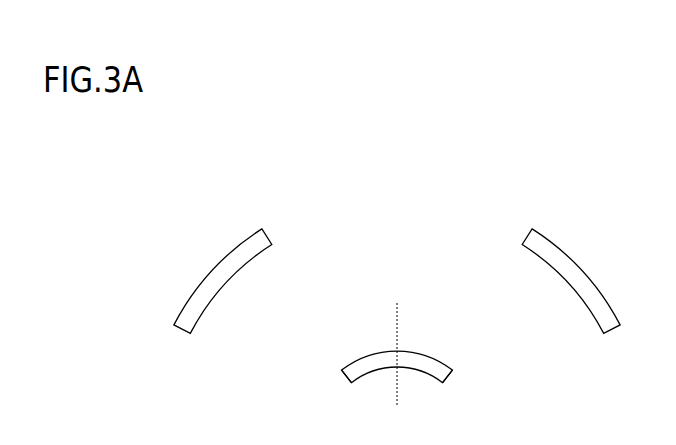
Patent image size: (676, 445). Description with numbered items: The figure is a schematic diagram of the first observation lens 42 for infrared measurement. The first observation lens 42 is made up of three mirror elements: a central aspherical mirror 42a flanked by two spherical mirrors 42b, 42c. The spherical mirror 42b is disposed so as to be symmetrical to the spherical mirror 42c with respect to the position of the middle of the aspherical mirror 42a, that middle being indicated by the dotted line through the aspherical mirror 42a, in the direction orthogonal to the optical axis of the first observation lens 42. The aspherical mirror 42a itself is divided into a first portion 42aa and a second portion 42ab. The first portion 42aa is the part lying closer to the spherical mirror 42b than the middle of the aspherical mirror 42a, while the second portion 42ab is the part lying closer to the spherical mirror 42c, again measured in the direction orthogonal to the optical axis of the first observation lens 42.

The first observation lens for infrared measurement 42 is at (597, 191).
The aspherical mirror 42a is at (335, 235).
The spherical mirror 42b is at (583, 286).
The spherical mirror 42c is at (212, 287).
The first portion 42aa is at (437, 365).
The second portion 42ab is at (362, 365).